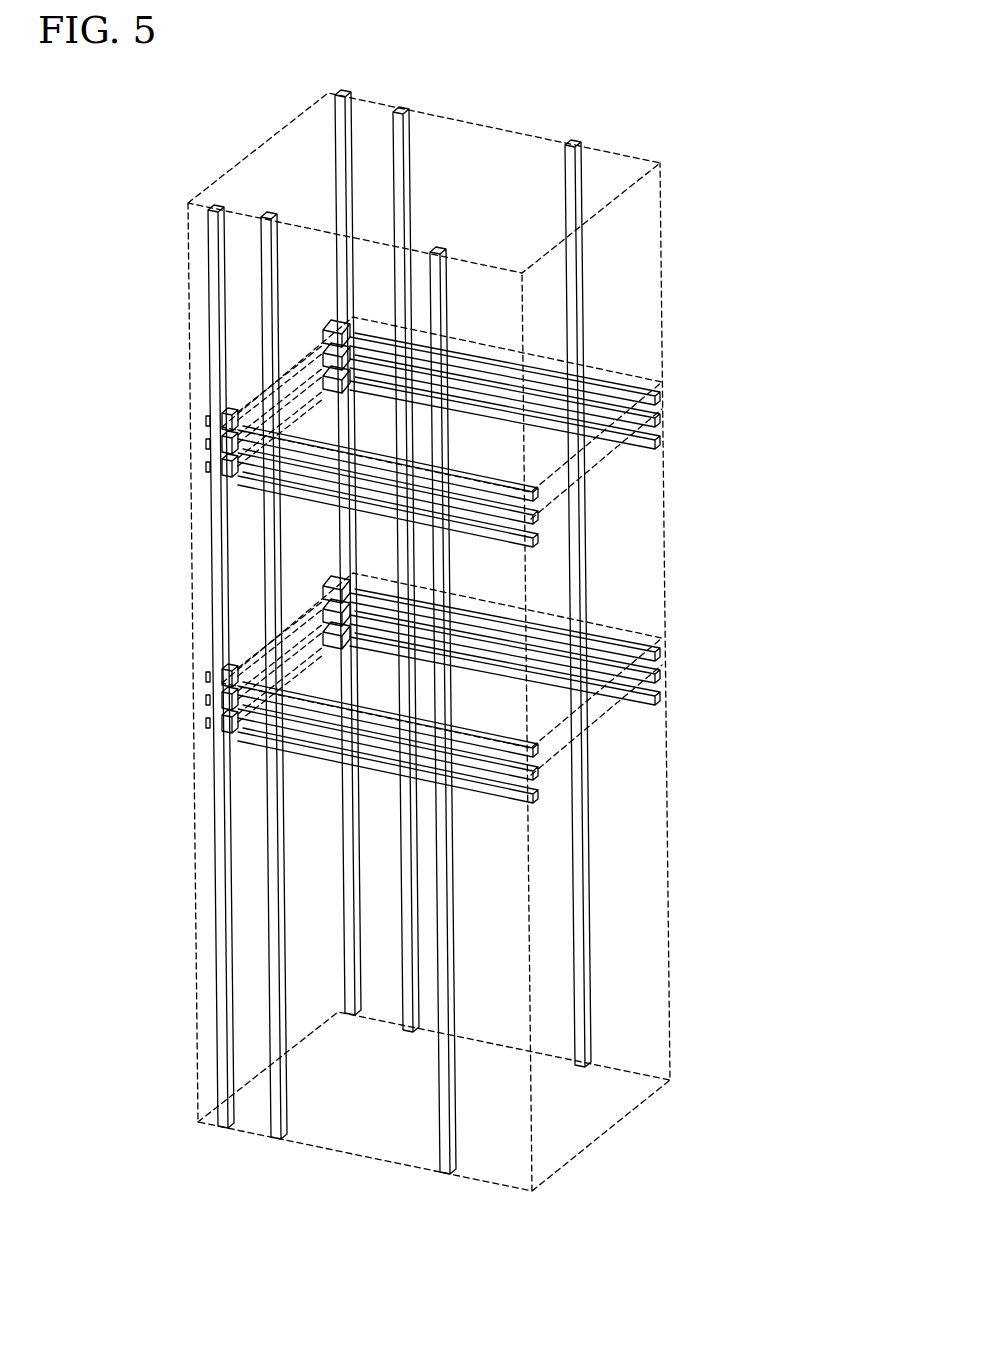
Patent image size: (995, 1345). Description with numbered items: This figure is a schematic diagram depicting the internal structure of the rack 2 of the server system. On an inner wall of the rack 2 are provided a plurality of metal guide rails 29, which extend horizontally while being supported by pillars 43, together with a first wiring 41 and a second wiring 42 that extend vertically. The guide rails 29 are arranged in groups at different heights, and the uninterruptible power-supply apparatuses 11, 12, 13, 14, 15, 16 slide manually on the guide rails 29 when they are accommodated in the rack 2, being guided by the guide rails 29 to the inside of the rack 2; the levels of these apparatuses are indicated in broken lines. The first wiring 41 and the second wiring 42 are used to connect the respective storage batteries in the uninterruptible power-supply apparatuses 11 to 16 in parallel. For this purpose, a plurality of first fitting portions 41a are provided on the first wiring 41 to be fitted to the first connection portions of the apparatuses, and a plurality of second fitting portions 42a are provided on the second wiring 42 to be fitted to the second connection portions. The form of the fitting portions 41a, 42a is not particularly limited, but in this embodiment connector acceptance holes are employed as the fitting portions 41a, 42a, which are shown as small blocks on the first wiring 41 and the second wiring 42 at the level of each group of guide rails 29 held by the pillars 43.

The rack 2 is at (280, 125).
The uninterruptible power-supply apparatus 11 is at (608, 368).
The uninterruptible power-supply apparatus 12 is at (628, 482).
The uninterruptible power-supply apparatus 13 is at (605, 497).
The uninterruptible power-supply apparatus 14 is at (626, 627).
The uninterruptible power-supply apparatus 15 is at (630, 721).
The uninterruptible power-supply apparatus 16 is at (600, 757).
The guide rail 29 is at (657, 445).
The first wiring 41 is at (215, 968).
The first fitting portion 41a is at (206, 467).
The second wiring 42 is at (343, 835).
The second fitting portion 42a is at (323, 379).
The pillar 43 is at (442, 1100).